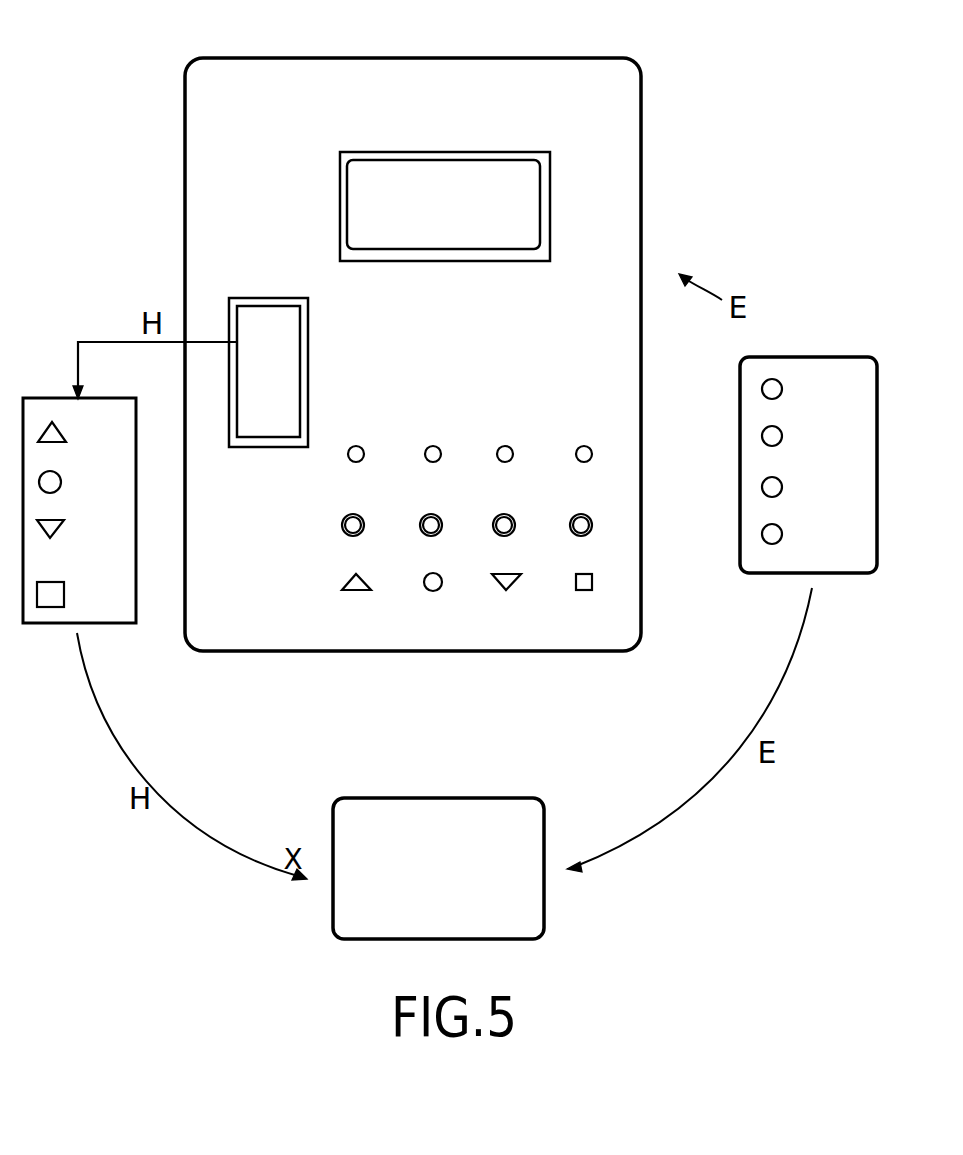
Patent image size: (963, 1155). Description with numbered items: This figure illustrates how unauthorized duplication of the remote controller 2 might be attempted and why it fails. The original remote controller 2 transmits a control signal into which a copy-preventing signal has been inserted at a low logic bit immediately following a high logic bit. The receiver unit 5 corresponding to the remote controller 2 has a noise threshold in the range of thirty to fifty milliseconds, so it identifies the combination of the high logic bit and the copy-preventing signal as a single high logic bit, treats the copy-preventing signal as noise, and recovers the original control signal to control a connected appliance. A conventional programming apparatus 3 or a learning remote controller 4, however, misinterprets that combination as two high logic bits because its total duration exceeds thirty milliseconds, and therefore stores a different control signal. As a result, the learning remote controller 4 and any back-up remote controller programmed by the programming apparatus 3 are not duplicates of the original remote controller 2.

The remote controller 2 is at (752, 467).
The programming apparatus 3 is at (557, 82).
The learning remote controller 4 is at (41, 410).
The receiver unit 5 is at (440, 828).